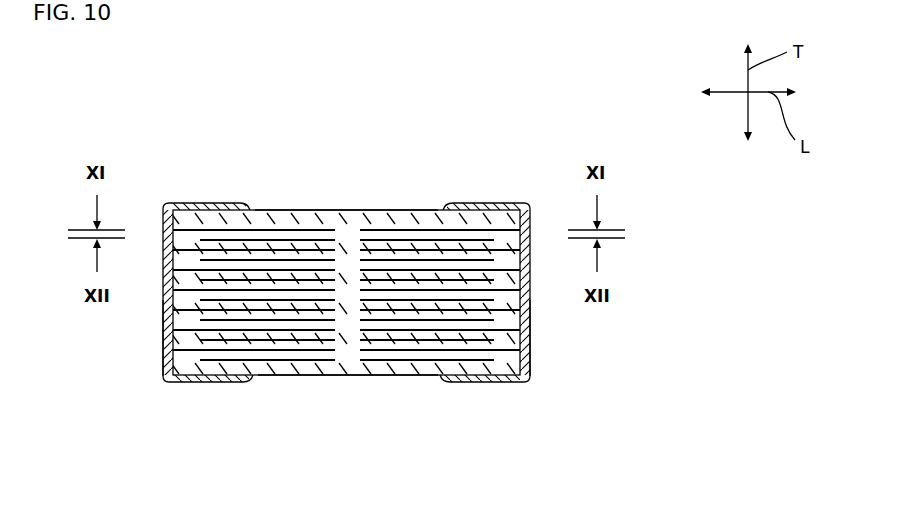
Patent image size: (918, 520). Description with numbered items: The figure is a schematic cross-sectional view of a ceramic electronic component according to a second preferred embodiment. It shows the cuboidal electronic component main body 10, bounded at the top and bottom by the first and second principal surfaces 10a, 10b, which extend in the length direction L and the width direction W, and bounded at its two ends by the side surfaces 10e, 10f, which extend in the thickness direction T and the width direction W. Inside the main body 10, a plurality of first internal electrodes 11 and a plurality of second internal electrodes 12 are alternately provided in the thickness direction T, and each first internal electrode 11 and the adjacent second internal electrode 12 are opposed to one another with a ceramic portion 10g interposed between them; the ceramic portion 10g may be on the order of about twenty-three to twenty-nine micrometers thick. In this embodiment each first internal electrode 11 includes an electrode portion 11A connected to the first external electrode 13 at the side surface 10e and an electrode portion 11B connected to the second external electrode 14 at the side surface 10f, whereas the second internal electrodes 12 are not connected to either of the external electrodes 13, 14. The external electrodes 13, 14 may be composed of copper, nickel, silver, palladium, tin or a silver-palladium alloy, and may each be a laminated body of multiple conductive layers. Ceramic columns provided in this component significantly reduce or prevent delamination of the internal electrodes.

The electronic component main body 10 is at (402, 204).
The first principal surface 10a is at (305, 210).
The second principal surface 10b is at (298, 376).
The side surface 10e is at (165, 366).
The side surface 10f is at (528, 362).
The ceramic portion 10g is at (427, 349).
The first internal electrode 11 is at (285, 352).
The electrode portion 11A is at (213, 347).
The electrode portion 11B is at (507, 347).
The second internal electrode 12 is at (367, 352).
The first external electrode 13 is at (165, 342).
The second external electrode 14 is at (528, 344).